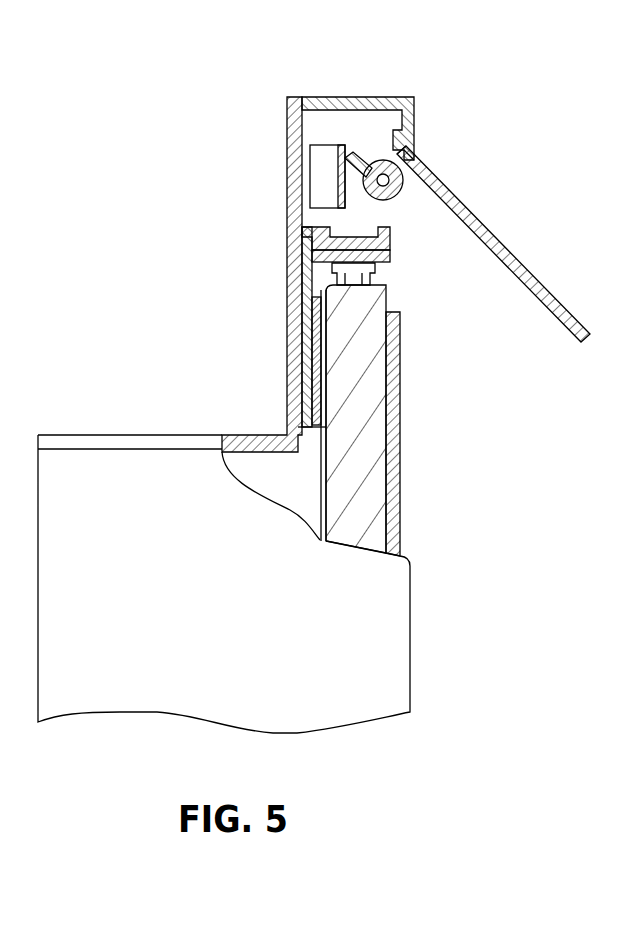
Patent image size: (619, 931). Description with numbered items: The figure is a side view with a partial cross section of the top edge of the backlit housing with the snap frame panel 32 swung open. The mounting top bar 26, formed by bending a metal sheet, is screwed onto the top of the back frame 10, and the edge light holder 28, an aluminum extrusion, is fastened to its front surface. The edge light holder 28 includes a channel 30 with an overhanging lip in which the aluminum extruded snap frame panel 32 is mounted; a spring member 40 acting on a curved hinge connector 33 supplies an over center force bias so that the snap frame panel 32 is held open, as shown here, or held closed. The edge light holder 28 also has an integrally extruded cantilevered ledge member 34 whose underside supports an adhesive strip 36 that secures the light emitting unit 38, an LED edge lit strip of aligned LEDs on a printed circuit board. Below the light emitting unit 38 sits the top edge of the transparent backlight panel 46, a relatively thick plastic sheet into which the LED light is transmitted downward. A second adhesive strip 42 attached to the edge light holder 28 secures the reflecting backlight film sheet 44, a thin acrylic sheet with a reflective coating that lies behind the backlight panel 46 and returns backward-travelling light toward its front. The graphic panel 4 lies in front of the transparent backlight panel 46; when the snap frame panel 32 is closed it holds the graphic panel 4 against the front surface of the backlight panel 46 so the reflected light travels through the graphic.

The graphic panel 4 is at (400, 503).
The back frame 10 is at (410, 652).
The mounting top bar 26 is at (287, 250).
The edge light holder 28 is at (364, 97).
The channel 30 is at (417, 162).
The snap frame panel 32 is at (527, 270).
The curved hinge connector 33 is at (382, 148).
The cantilevered ledge member 34 is at (393, 236).
The adhesive strip 36 is at (391, 258).
The light emitting unit 38 is at (376, 270).
The spring member 40 is at (325, 172).
The adhesive strip 42 is at (310, 343).
The backlight film sheet 44 is at (320, 493).
The transparent backlight panel 46 is at (390, 462).